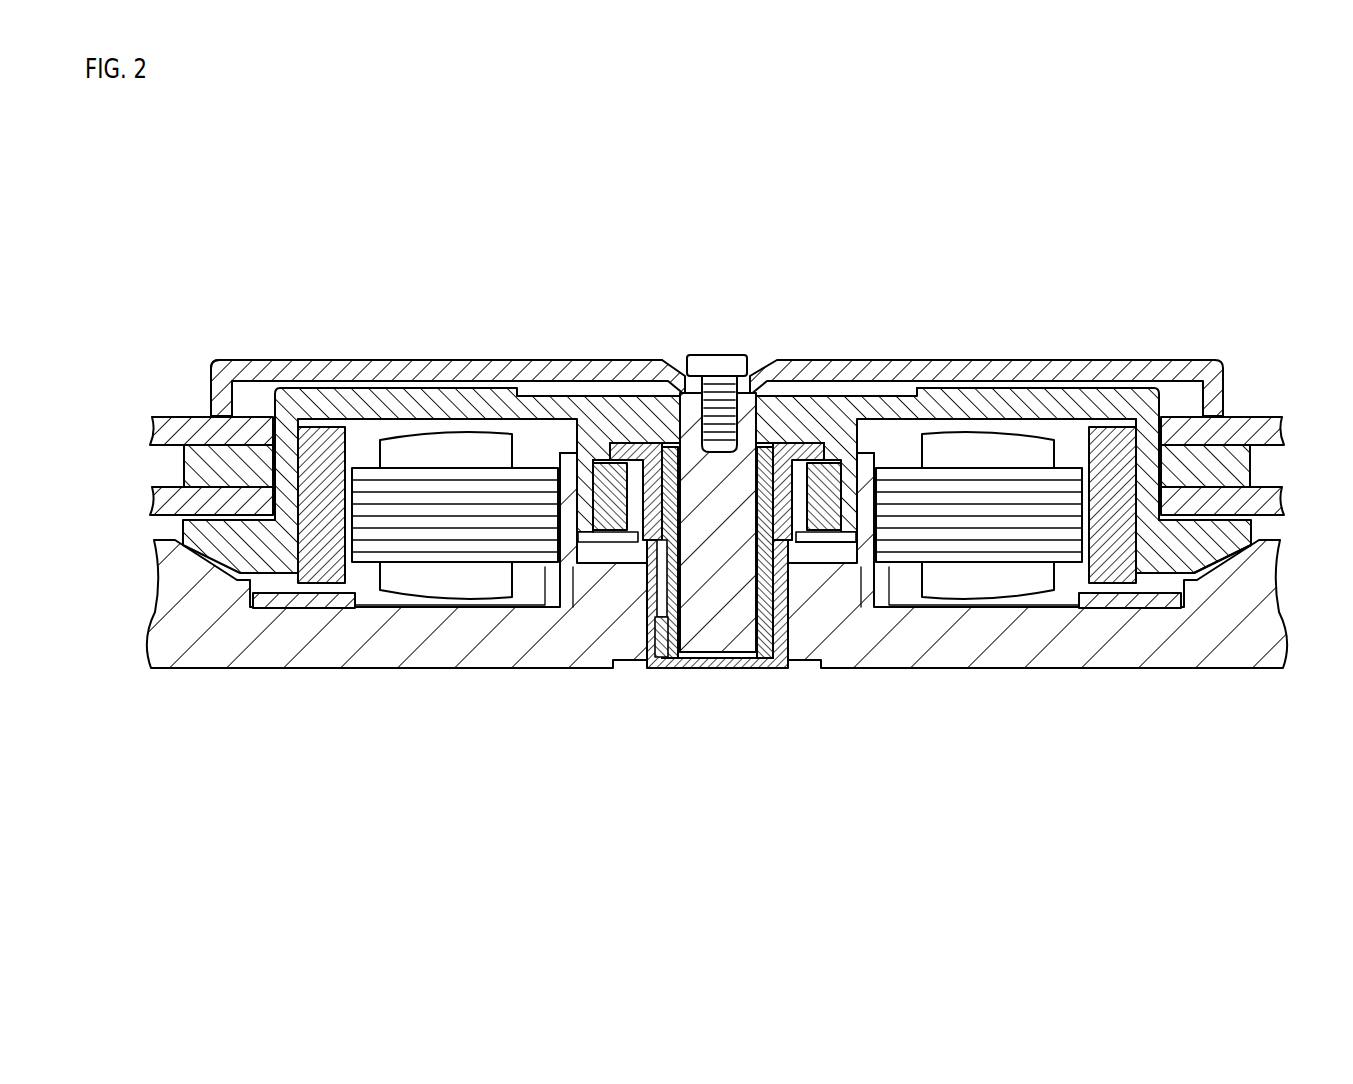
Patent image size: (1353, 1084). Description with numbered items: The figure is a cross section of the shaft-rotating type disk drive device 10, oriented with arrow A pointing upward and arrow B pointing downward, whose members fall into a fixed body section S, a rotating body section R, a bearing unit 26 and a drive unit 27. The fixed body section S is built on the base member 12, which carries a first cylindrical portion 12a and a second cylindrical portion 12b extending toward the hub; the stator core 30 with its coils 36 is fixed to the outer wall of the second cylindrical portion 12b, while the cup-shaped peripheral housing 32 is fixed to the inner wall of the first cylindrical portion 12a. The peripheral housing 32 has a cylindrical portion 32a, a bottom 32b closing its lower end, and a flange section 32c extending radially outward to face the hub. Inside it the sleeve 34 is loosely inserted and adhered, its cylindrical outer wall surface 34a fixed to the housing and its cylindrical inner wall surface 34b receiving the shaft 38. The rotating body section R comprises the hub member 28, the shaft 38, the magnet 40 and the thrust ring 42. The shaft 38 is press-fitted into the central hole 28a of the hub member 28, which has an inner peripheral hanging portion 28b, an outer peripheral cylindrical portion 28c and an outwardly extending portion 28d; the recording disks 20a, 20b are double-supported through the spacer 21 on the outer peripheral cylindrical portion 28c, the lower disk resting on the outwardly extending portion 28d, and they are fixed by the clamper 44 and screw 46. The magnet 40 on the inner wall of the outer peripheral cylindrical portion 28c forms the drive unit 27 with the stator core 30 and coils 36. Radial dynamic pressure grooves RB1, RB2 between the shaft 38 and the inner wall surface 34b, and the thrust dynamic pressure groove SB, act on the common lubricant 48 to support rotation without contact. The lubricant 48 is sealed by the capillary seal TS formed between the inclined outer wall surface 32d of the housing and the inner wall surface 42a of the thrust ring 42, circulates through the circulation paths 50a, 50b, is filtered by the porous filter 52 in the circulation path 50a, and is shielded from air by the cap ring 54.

The disk drive device 10 is at (882, 212).
The base member 12 is at (1265, 572).
The first cylindrical portion 12a is at (566, 566).
The second cylindrical portion 12b is at (518, 607).
The recording disk 20a is at (1256, 422).
The recording disk 20b is at (1265, 502).
The spacer 21 is at (1240, 464).
The bearing unit 26 is at (690, 508).
The drive unit 27 is at (465, 440).
The hub member 28 is at (1128, 425).
The central hole 28a is at (670, 440).
The inner peripheral hanging portion 28b is at (575, 490).
The outer peripheral cylindrical portion 28c is at (1163, 430).
The outwardly extending portion 28d is at (1210, 575).
The stator core 30 is at (1068, 418).
The peripheral housing 32 is at (768, 600).
The cylindrical portion 32a is at (768, 447).
The bottom 32b is at (762, 658).
The flange section 32c is at (790, 452).
The outer wall surface 32d is at (812, 545).
The sleeve 34 is at (782, 605).
The cylindrical outer wall surface 34a is at (792, 612).
The cylindrical inner wall surface 34b is at (730, 668).
The coils 36 is at (422, 452).
The shaft 38 is at (716, 660).
The magnet 40 is at (310, 430).
The thrust ring 42 is at (618, 446).
The inner wall surface 42a is at (793, 542).
The clamper 44 is at (1095, 386).
The screw 46 is at (714, 356).
The lubricant 48 is at (656, 562).
The circulation path 50a is at (615, 480).
The circulation path 50b is at (818, 478).
The porous filter 52 is at (658, 632).
The cap ring 54 is at (856, 548).
The arrow A is at (357, 358).
The arrow B is at (302, 672).
The fixed body section S is at (213, 637).
The rotating body section R is at (937, 358).
The thrust dynamic pressure groove SB is at (800, 462).
The capillary seal TS is at (800, 572).
The radial dynamic pressure groove RB1 is at (678, 523).
The radial dynamic pressure groove RB2 is at (677, 590).